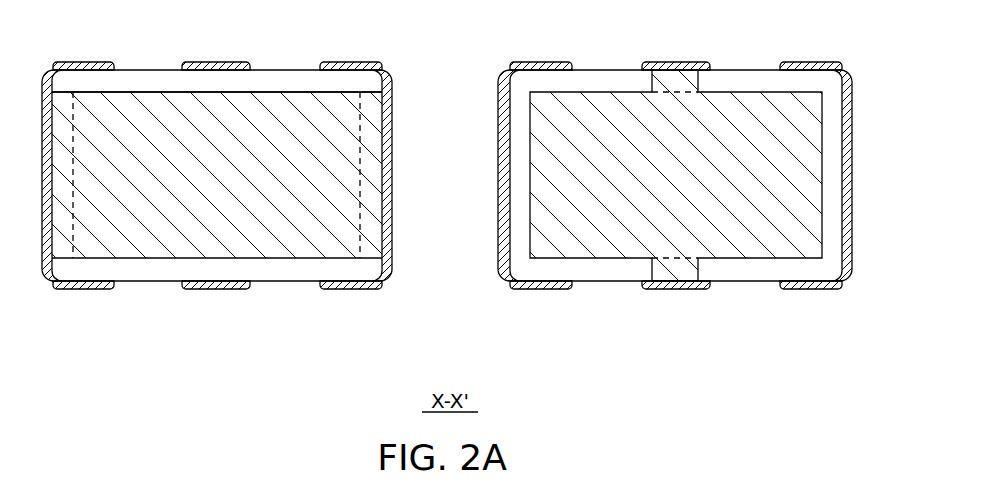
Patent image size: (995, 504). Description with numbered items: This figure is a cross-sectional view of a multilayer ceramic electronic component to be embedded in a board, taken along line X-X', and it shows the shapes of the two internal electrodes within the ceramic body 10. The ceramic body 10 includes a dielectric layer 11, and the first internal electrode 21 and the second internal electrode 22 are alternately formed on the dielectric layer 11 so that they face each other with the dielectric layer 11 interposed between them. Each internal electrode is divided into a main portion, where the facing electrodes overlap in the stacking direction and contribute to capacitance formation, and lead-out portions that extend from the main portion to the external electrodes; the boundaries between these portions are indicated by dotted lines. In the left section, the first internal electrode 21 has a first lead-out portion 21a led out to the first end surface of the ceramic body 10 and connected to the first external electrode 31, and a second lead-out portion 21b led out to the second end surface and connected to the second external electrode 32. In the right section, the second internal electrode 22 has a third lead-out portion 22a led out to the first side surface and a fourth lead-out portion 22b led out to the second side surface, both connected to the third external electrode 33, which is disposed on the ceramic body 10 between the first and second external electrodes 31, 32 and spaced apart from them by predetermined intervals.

The ceramic body 10 is at (280, 282).
The dielectric layer 11 is at (192, 82).
The first internal electrode 21 is at (147, 260).
The first lead-out portion 21a is at (62, 103).
The second lead-out portion 21b is at (372, 107).
The second internal electrode 22 is at (607, 260).
The third lead-out portion 22a is at (672, 82).
The fourth lead-out portion 22b is at (675, 267).
The first external electrode 31 is at (91, 65).
The second external electrode 32 is at (348, 64).
The third external electrode 33 is at (238, 64).